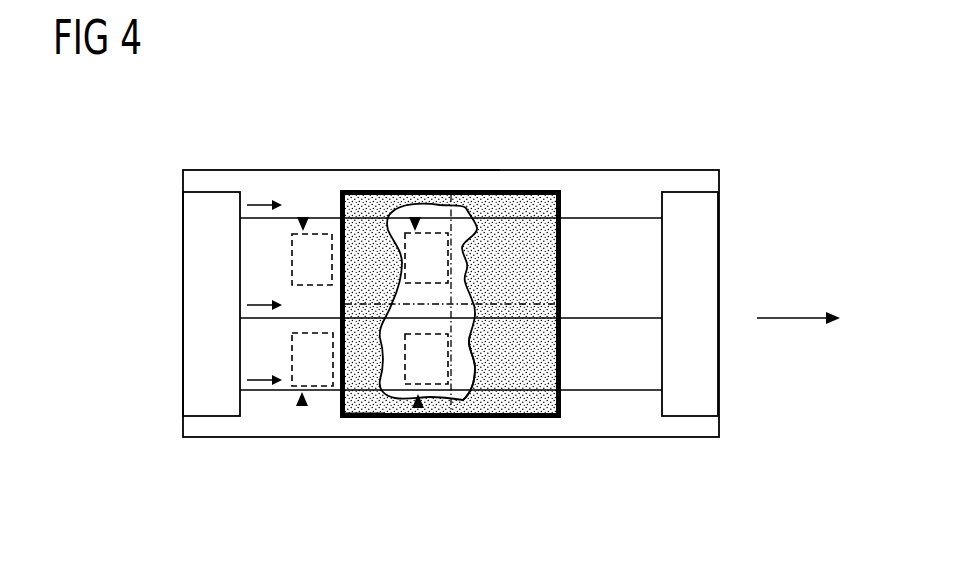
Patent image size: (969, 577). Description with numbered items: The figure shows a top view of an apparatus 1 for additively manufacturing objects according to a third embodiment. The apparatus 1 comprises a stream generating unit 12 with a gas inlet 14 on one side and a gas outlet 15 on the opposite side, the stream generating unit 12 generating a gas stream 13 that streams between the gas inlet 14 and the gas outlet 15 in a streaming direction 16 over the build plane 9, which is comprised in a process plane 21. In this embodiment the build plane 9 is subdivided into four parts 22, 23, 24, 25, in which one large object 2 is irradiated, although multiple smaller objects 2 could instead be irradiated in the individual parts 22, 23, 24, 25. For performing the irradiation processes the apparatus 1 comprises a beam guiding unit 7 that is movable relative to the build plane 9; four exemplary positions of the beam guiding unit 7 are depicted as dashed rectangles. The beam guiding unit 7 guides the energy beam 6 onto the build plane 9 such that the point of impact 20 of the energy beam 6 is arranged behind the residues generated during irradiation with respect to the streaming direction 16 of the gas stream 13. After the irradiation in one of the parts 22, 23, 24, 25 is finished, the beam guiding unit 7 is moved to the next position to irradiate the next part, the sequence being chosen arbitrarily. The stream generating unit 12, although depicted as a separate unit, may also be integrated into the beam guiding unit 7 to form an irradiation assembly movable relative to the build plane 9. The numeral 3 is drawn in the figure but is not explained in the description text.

The apparatus 1 is at (767, 139).
The object 2 is at (466, 388).
The carrier 3 is at (515, 403).
The energy beam 6 is at (324, 261).
The beam guiding unit 7 is at (303, 218).
The build plane 9 is at (536, 212).
The stream generating unit 12 is at (223, 167).
The gas stream 13 is at (608, 217).
The gas inlet 14 is at (205, 418).
The gas outlet 15 is at (690, 418).
The streaming direction 16 is at (785, 319).
The point of impact 20 is at (410, 276).
The process plane 21 is at (465, 170).
The part of the build plane 22 is at (388, 206).
The part of the build plane 23 is at (522, 205).
The part of the build plane 24 is at (364, 405).
The part of the build plane 25 is at (547, 403).